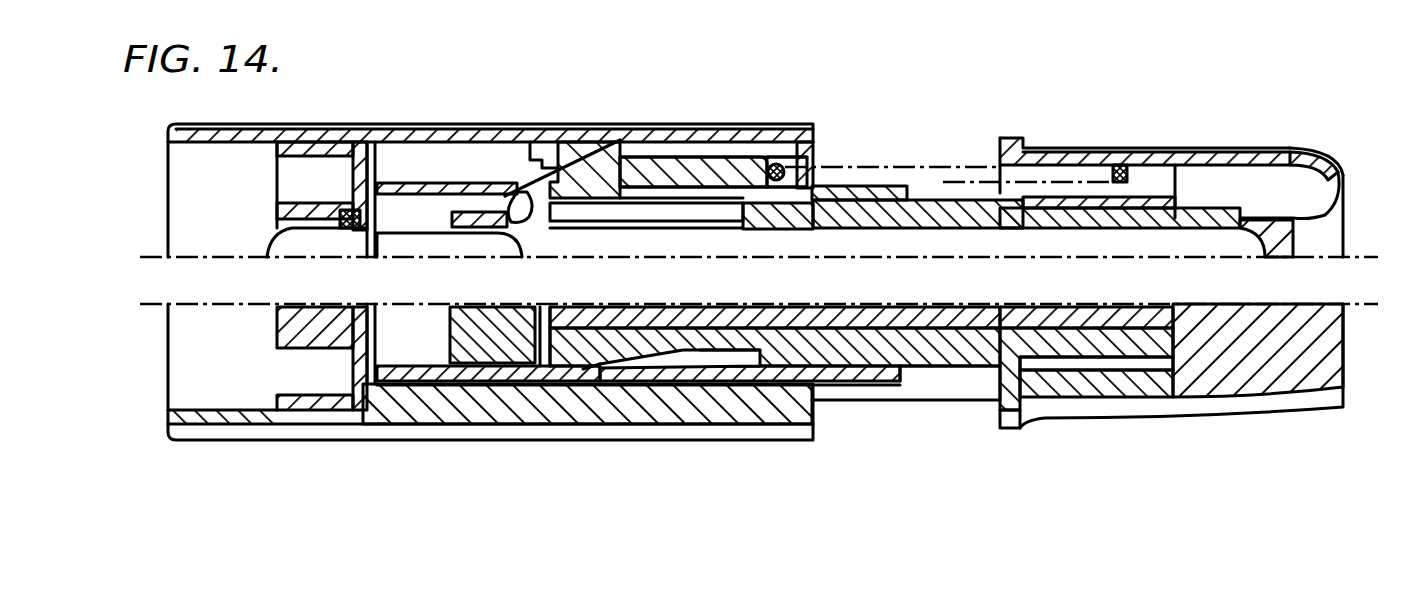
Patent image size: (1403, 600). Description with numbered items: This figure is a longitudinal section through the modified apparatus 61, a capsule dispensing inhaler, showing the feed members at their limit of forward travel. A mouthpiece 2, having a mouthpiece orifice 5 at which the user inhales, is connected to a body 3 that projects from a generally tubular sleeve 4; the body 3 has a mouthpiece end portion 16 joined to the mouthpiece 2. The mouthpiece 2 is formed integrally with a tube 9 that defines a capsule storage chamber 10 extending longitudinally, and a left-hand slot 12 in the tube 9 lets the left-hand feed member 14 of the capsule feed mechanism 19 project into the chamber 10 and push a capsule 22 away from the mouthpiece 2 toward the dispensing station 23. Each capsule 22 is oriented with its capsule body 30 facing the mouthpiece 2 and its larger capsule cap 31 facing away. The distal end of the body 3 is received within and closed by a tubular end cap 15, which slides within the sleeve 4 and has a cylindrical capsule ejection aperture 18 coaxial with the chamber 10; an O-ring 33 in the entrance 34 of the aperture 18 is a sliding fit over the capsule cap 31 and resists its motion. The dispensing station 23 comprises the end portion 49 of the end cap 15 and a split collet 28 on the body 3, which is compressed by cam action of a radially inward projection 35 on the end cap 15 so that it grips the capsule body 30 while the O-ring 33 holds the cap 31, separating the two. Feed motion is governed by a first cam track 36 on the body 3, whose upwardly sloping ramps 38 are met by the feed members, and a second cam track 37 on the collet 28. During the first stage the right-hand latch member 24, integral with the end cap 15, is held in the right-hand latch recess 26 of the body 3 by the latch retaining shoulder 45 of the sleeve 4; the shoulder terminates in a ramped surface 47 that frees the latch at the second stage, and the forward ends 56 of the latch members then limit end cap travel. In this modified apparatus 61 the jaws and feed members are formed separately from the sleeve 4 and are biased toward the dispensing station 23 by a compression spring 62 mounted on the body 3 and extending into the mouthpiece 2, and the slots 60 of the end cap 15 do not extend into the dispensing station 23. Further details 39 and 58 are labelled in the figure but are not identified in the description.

The mouthpiece 2 is at (1250, 160).
The body 3 is at (957, 362).
The sleeve 4 is at (238, 128).
The mouthpiece orifice 5 is at (1345, 175).
The tube 9 is at (850, 190).
The capsule storage chamber 10 is at (930, 237).
The left-hand slot 12 is at (680, 212).
The left-hand feed member 14 is at (507, 193).
The end cap 15 is at (580, 383).
The mouthpiece end portion 16 is at (1105, 155).
The capsule ejection aperture 18 is at (265, 249).
The capsule feed mechanism 19 is at (560, 165).
The capsule 22 is at (398, 240).
The dispensing station 23 is at (520, 295).
The right-hand latch member 24 is at (605, 382).
The right-hand latch recess 26 is at (740, 358).
The collet 28 is at (480, 357).
The capsule body 30 is at (430, 247).
The capsule cap 31 is at (273, 240).
The O-ring 33 is at (350, 210).
The entrance 34 is at (372, 264).
The radially inward projection 35 is at (497, 373).
The first cam track 36 is at (660, 217).
The second cam track 37 is at (412, 207).
The upwardly sloping ramps 38 is at (703, 177).
The lip 39 is at (646, 216).
The right latch retaining shoulder 45 is at (553, 407).
The ramped surface 47 is at (598, 382).
The end portion 49 is at (300, 403).
The forward ends 56 is at (597, 357).
The shoulder 58 is at (628, 212).
The slots 60 is at (517, 215).
The modified apparatus 61 is at (158, 163).
The compression spring 62 is at (777, 165).